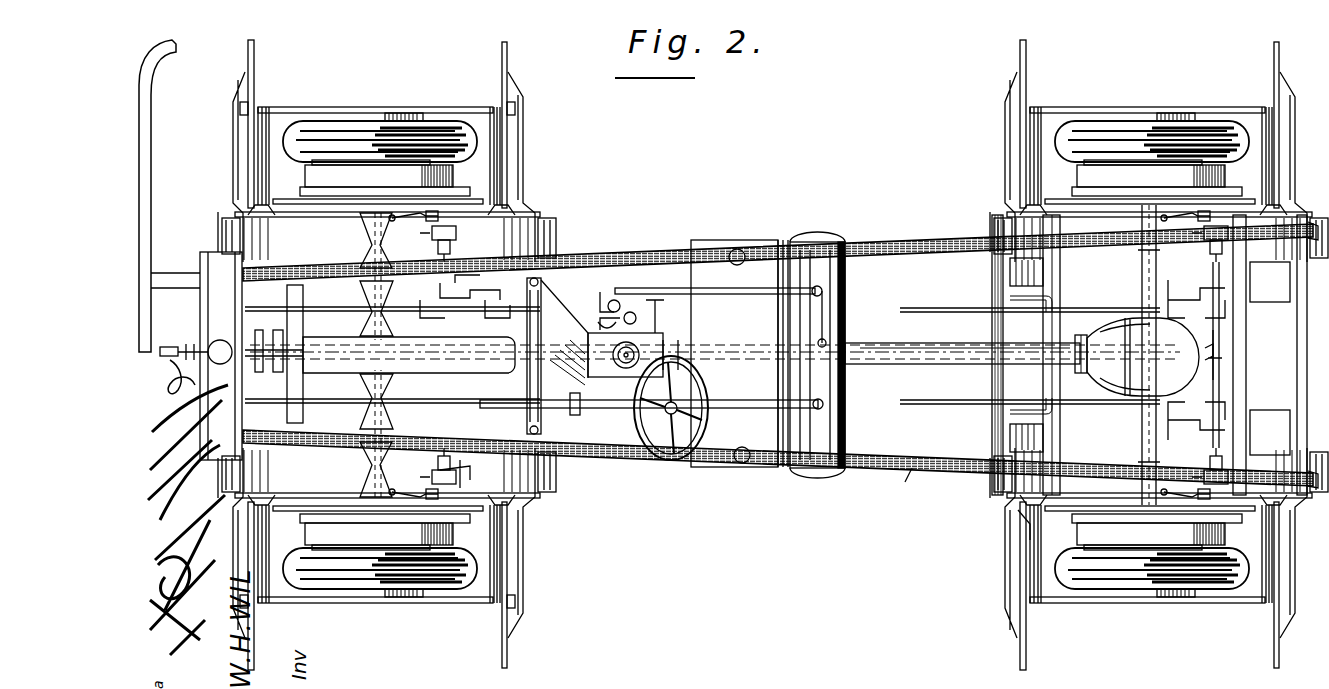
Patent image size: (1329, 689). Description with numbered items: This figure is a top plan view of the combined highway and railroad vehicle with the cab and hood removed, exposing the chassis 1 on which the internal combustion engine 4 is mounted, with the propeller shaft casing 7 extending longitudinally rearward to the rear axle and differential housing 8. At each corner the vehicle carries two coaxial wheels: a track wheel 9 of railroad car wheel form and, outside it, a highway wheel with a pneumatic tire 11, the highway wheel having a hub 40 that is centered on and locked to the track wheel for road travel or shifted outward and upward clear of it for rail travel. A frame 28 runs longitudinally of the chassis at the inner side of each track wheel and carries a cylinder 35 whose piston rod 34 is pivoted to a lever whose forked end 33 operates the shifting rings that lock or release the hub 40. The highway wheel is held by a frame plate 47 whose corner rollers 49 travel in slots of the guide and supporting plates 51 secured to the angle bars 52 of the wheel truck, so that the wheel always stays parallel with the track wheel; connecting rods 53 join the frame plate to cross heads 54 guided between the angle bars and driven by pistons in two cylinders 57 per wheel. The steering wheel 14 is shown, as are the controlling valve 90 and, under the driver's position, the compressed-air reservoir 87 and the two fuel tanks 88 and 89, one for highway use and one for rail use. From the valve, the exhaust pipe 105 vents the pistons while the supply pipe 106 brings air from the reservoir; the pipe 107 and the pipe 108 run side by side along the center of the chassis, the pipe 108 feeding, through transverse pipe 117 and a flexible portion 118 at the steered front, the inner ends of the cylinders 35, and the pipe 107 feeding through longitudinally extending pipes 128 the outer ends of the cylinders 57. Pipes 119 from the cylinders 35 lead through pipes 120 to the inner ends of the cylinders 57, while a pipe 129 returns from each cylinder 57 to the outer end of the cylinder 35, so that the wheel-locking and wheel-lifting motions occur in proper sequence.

The chassis 1 is at (914, 483).
The internal combustion engine 4 is at (670, 356).
The propeller shaft casing 7 is at (912, 348).
The rear axle and differential housing 8 is at (1176, 336).
The track wheel 9 is at (444, 183).
The pneumatic tire 11 is at (420, 128).
The steering wheel 14 is at (660, 462).
The frame 28 is at (286, 202).
The forked end of lever 33 is at (396, 216).
The piston rod 34 is at (472, 472).
The cylinder 35 is at (458, 252).
The hub of highway wheel 40 is at (398, 112).
The frame plate 47 is at (325, 106).
The roller 49 is at (240, 104).
The guide and supporting plate 51 is at (255, 56).
The angle bar 52 is at (233, 185).
The connecting rod 53 is at (258, 148).
The cross head 54 is at (1020, 516).
The cylinder 57 is at (248, 238).
The reservoir 87 is at (850, 420).
The fuel tank 88 is at (739, 353).
The fuel tank 89 is at (676, 343).
The controlling valve 90 is at (610, 316).
The exhaust pipe 105 is at (665, 320).
The supply pipe 106 is at (733, 296).
The pipe 107 is at (695, 340).
The pipe 108 is at (640, 262).
The transverse pipe 117 is at (1213, 378).
The flexible portion 118 is at (445, 312).
The pipe 119 is at (392, 312).
The pipe 120 is at (312, 308).
The longitudinally extending pipe 128 is at (308, 218).
The pipe 129 is at (452, 286).